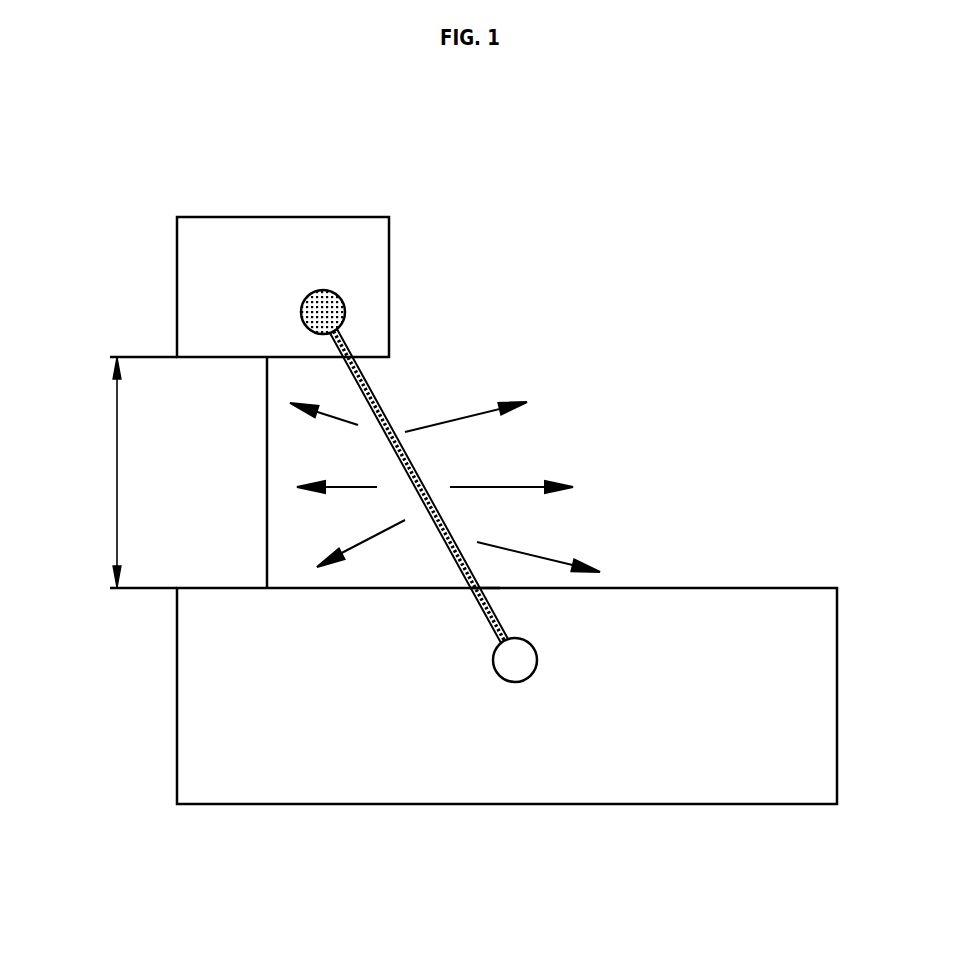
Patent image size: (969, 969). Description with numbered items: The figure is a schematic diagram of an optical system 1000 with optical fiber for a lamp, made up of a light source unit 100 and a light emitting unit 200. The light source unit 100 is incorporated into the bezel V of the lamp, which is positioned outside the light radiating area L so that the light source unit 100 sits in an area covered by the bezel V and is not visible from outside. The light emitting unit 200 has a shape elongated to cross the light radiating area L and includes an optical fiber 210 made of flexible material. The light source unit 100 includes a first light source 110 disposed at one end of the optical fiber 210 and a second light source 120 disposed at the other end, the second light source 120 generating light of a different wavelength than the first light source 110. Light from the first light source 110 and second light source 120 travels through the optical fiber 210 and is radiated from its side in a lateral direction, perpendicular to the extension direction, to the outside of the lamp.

The optical system 1000 is at (638, 187).
The light source unit 100 is at (777, 463).
The first light source 110 is at (345, 306).
The second light source 120 is at (533, 648).
The light emitting unit 200 is at (395, 623).
The optical fiber 210 is at (483, 612).
The bezel V is at (228, 240).
The light radiating area L is at (132, 472).